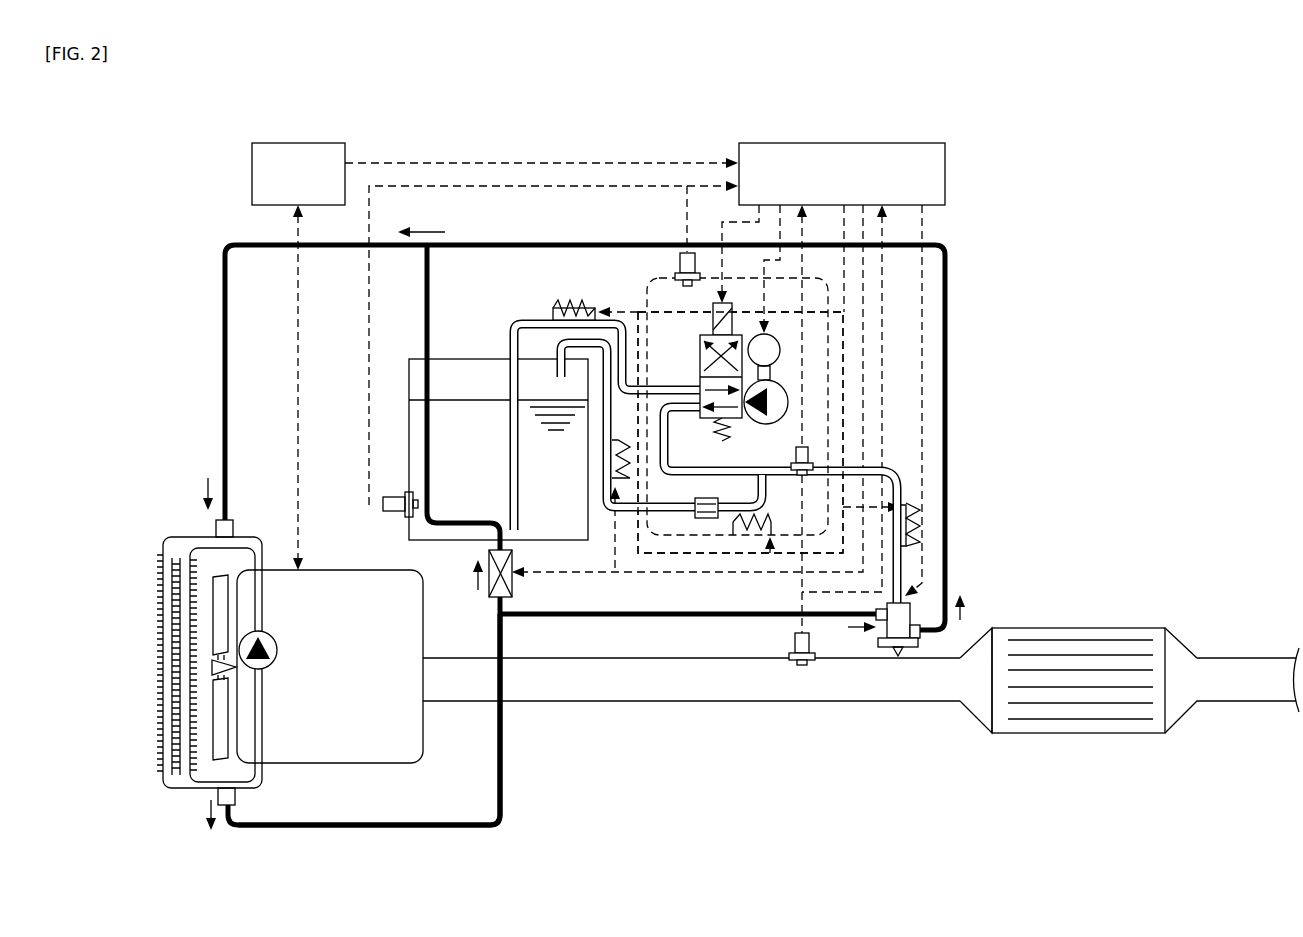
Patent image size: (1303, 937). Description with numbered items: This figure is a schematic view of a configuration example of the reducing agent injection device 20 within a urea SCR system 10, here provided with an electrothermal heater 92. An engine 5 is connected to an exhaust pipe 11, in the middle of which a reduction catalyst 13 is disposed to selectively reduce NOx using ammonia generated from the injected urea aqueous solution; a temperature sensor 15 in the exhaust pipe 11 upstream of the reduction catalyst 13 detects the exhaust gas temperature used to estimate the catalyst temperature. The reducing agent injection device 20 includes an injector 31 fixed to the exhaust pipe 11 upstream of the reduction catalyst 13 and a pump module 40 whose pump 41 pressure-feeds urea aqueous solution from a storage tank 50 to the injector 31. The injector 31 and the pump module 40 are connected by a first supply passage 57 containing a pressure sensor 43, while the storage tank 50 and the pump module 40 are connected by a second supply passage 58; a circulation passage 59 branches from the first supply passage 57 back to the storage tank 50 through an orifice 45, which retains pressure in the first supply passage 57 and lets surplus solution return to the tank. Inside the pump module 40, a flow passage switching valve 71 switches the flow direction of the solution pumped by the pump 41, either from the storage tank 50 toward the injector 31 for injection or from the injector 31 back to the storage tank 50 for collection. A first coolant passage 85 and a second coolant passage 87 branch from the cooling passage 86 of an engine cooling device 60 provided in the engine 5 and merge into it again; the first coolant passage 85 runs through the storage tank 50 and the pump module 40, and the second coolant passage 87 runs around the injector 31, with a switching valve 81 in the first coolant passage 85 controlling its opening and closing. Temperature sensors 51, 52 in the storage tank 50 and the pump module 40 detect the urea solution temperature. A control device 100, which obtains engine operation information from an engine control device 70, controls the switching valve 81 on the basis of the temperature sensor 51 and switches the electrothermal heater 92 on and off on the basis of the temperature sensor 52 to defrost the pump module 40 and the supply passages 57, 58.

The engine 5 is at (423, 735).
The urea SCR system 10 is at (1100, 195).
The exhaust pipe 11 is at (620, 701).
The reduction catalyst 13 is at (1130, 628).
The temperature sensor 15 is at (790, 645).
The reducing agent injection device 20 is at (975, 340).
The injector 31 is at (912, 610).
The pump module 40 is at (648, 302).
The pump 41 is at (752, 425).
The pressure sensor 43 is at (796, 455).
The orifice 45 is at (696, 500).
The storage tank 50 is at (470, 357).
The temperature sensor 51 is at (385, 514).
The temperature sensor 52 is at (680, 263).
The first supply passage 57 is at (670, 447).
The second supply passage 58 is at (545, 310).
The circulation passage 59 is at (771, 522).
The engine cooling device 60 is at (150, 521).
The engine control device 70 is at (313, 143).
The flow passage switching valve 71 is at (700, 341).
The switching valve 81 is at (513, 582).
The first coolant passage 85 is at (505, 760).
The cooling passage 86 is at (185, 790).
The second coolant passage 87 is at (662, 617).
The electrothermal heater 92 is at (732, 535).
The control device 100 is at (913, 143).